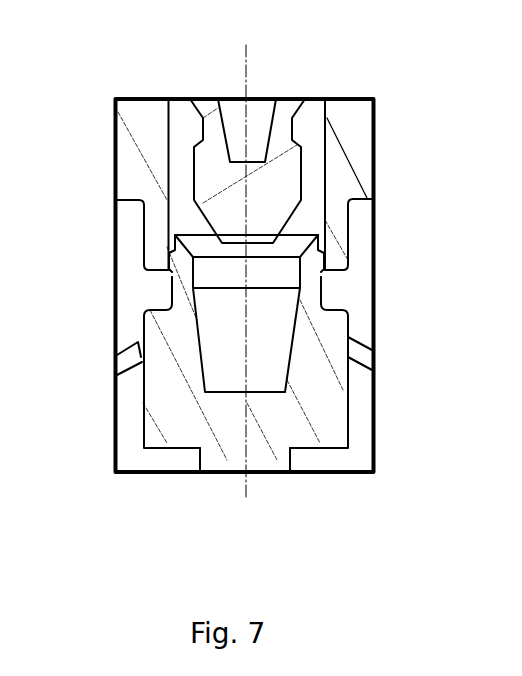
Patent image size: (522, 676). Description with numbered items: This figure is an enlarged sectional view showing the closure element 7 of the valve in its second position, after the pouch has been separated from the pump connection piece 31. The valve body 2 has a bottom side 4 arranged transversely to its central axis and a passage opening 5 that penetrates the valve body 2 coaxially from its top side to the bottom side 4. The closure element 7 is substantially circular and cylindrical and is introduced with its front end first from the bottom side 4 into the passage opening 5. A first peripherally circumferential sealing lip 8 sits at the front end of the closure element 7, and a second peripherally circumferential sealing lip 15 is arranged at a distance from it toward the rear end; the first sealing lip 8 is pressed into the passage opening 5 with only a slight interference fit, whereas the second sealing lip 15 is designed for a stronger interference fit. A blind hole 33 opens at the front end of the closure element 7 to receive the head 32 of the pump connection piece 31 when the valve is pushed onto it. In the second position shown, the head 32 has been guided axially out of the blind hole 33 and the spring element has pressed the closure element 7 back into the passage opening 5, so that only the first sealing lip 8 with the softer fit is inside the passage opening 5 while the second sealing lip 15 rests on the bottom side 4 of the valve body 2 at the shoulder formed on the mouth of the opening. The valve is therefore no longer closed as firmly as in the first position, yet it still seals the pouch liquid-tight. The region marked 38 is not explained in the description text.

The valve body 2 is at (133, 167).
The bottom side 4 is at (370, 272).
The passage opening 5 is at (182, 157).
The closure element 7 is at (238, 453).
The first sealing lip 8 is at (154, 239).
The second sealing lip 15 is at (158, 288).
The pump connection piece 31 is at (207, 106).
The head 32 is at (273, 190).
The blind hole 33 is at (222, 355).
The neck of insert 38 is at (340, 272).